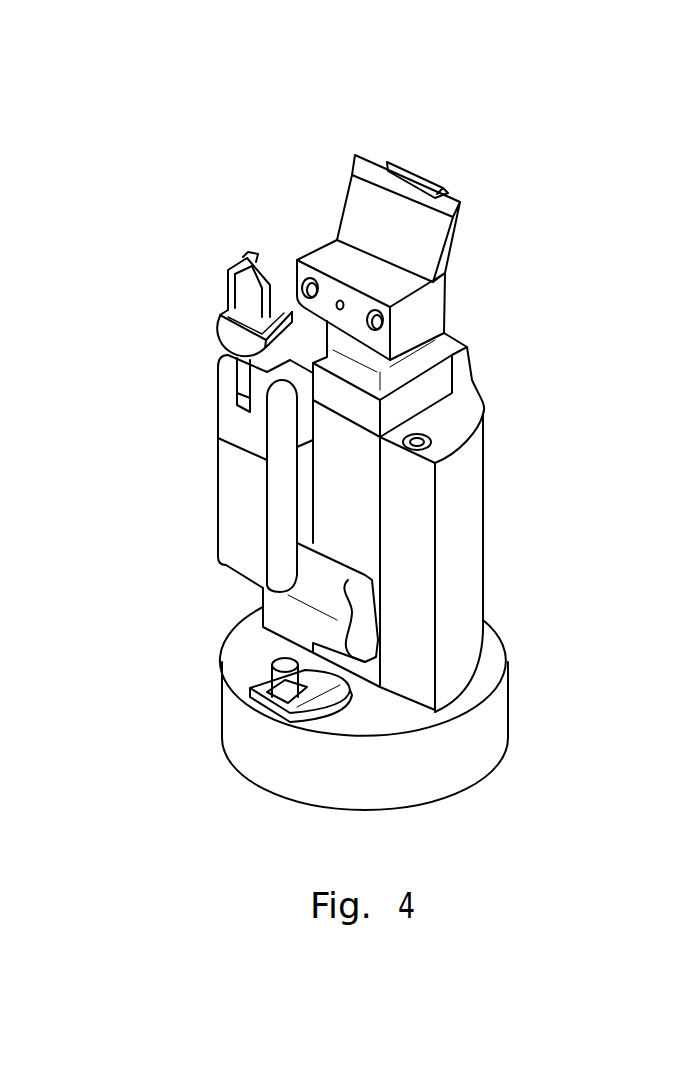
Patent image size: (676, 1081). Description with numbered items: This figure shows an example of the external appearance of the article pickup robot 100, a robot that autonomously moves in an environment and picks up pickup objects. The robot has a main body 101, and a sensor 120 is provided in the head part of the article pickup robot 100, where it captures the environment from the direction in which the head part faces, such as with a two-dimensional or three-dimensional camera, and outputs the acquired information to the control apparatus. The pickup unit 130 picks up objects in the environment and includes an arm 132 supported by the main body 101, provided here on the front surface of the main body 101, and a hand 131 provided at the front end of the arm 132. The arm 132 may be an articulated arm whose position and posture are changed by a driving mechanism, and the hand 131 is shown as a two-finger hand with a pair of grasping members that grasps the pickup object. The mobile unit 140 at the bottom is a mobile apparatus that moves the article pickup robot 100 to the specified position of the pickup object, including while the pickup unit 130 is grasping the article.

The article pickup robot 100 is at (357, 108).
The main body 101 is at (475, 542).
The sensor 120 is at (388, 318).
The pickup unit 130 is at (108, 245).
The hand 131 is at (227, 270).
The arm 132 is at (225, 497).
The mobile unit 140 is at (228, 732).